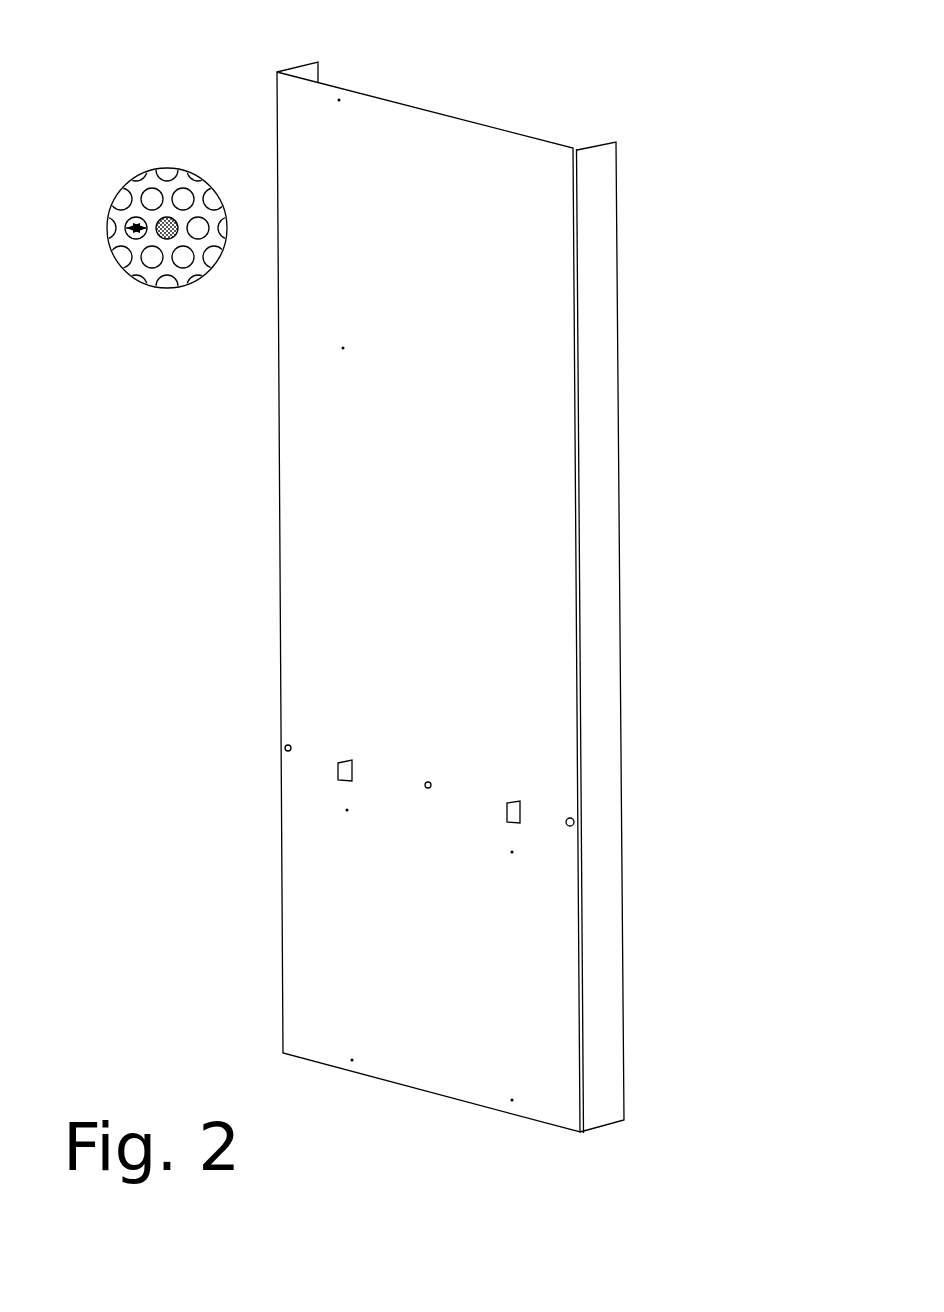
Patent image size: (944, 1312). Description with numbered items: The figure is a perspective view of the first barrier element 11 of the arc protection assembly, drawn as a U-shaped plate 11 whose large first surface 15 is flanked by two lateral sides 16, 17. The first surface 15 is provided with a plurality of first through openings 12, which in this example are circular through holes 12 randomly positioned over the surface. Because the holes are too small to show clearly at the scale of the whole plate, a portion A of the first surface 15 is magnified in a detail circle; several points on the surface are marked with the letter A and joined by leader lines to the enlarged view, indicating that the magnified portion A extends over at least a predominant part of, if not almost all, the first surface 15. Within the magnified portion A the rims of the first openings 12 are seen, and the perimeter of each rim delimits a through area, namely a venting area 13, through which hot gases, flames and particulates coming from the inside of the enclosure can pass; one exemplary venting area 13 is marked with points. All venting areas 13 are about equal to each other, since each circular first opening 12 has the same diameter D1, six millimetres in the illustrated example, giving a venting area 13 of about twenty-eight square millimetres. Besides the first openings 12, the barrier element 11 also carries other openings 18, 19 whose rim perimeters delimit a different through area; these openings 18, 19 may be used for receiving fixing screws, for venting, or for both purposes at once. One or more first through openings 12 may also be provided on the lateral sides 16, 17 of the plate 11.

The first barrier element 11 is at (449, 574).
The first through openings 12 is at (168, 209).
The venting area 13 is at (197, 233).
The first surface 15 is at (425, 133).
The lateral side 16 is at (605, 213).
The lateral side 17 is at (309, 72).
The opening 18 is at (338, 771).
The opening 19 is at (510, 142).
The diameter D1 is at (136, 219).
The magnified portion A is at (124, 185).